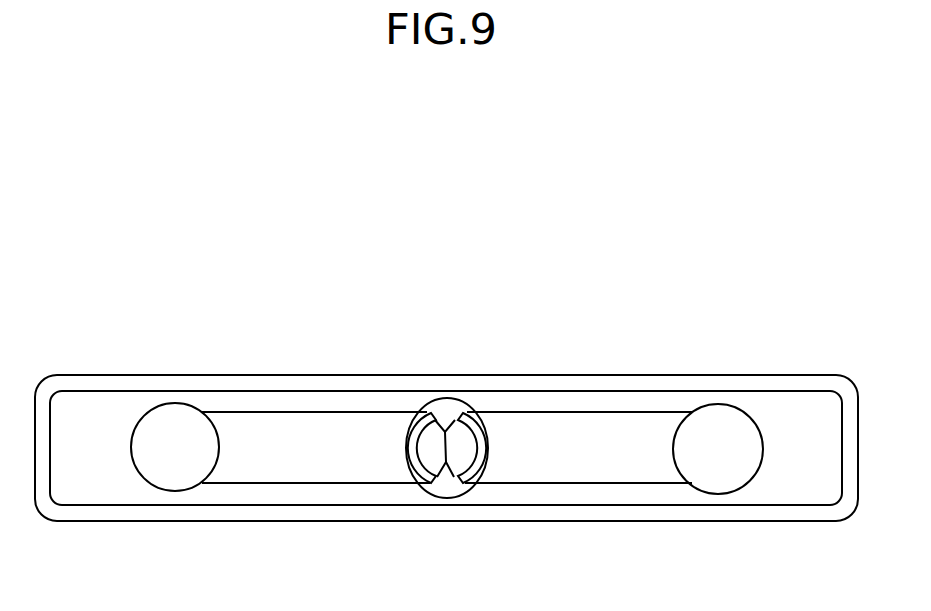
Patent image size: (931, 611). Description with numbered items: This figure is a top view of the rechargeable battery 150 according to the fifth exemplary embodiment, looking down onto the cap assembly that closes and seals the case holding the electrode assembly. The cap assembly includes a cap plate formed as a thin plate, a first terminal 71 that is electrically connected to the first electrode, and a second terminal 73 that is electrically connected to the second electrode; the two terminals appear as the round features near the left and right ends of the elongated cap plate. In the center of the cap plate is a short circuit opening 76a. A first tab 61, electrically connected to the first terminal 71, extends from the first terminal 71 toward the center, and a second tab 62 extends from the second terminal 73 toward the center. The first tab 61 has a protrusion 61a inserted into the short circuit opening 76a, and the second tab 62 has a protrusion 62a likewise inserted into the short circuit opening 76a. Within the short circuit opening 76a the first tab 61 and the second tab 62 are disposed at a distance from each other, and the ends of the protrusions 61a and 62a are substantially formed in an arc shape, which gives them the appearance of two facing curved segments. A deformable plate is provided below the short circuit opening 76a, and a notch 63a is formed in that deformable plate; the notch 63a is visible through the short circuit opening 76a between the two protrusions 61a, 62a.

The rechargeable battery 150 is at (536, 230).
The first terminal 71 is at (174, 410).
The second terminal 73 is at (722, 413).
The first tab 61 is at (312, 420).
The second tab 62 is at (606, 422).
The protrusion 61a is at (436, 412).
The protrusion 62a is at (458, 486).
The notch 63a is at (448, 443).
The short circuit opening 76a is at (428, 496).